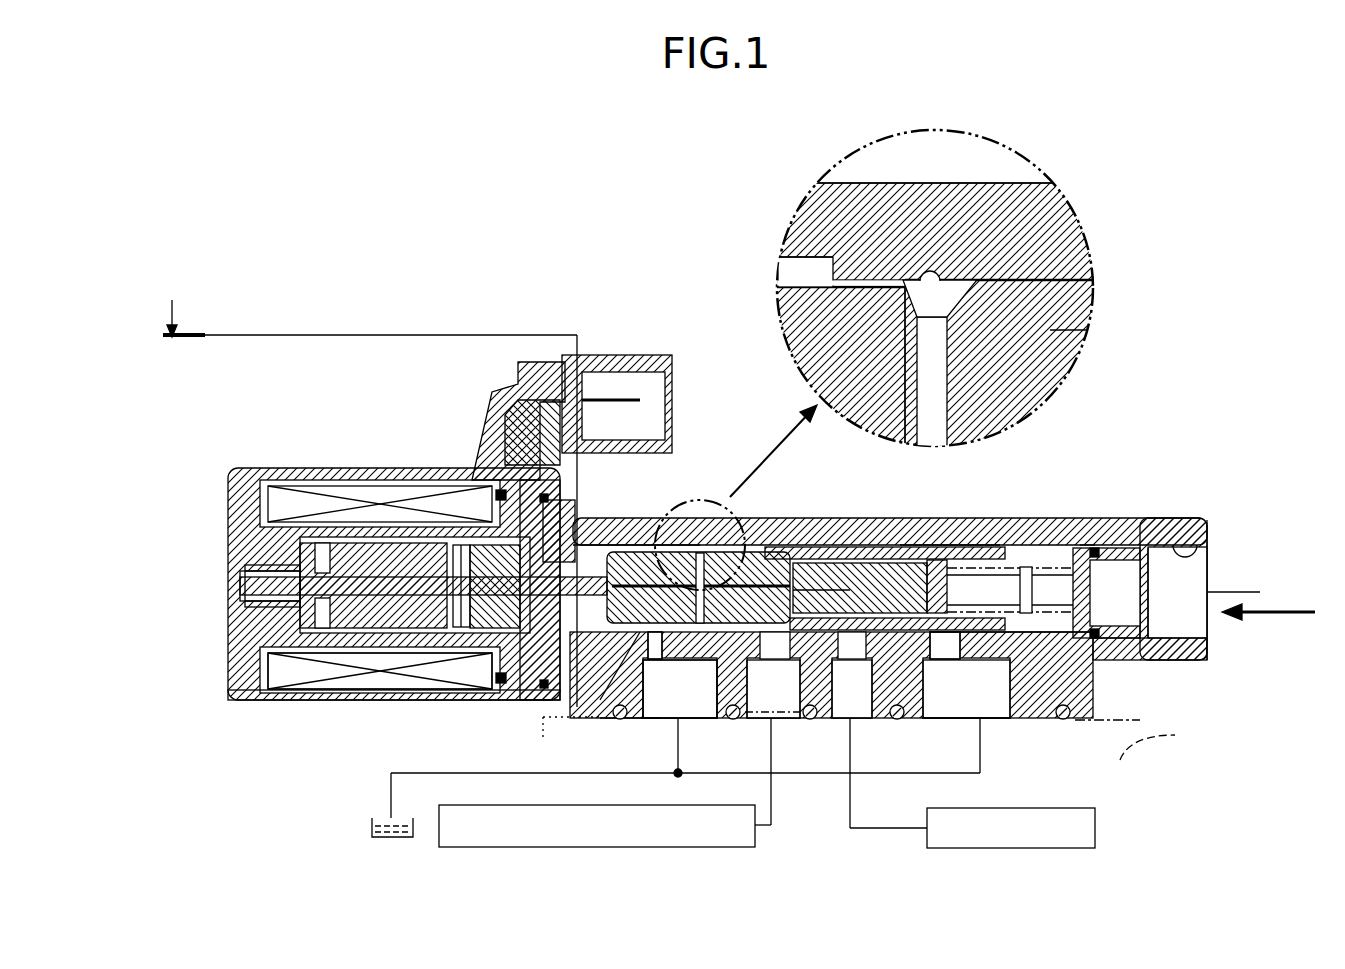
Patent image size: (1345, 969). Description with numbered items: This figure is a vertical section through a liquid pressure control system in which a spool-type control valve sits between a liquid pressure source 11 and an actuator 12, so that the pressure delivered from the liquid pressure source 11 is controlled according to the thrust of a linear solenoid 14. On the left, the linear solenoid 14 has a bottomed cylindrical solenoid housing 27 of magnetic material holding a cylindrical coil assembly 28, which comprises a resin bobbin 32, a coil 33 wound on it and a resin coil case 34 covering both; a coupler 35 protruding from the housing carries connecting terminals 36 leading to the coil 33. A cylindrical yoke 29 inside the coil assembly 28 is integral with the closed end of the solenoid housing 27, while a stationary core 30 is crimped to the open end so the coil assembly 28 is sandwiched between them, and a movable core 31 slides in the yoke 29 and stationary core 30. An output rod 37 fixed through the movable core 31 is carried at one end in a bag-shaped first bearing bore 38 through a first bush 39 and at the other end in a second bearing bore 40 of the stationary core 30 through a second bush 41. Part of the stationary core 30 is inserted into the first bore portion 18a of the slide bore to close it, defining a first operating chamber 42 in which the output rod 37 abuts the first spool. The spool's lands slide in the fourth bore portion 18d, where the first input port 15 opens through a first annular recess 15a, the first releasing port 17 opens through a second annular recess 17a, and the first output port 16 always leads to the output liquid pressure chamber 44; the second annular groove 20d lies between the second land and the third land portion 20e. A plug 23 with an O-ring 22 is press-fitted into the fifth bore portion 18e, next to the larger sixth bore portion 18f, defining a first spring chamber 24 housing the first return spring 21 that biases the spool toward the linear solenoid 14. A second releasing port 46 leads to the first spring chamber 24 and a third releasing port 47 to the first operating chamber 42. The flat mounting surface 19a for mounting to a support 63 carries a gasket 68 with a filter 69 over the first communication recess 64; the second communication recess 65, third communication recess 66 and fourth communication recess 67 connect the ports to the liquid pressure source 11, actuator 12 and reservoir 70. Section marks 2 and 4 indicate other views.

The section line 2- 2 is at (1253, 558).
The section line 4- 4 is at (368, 481).
The liquid pressure source 11 is at (445, 812).
The actuator 12 is at (1090, 810).
The linear solenoid 14 is at (225, 493).
The first input port 15 is at (695, 648).
The first annular recess 15a is at (785, 555).
The first output port 16 is at (870, 605).
The first releasing port 17 is at (940, 665).
The second annular recess 17a is at (985, 560).
The first bore portion 18a is at (578, 705).
The fourth bore portion 18d is at (925, 283).
The fifth bore portion 18e is at (1080, 545).
The sixth bore portion 18f is at (1210, 545).
The mounting surface 19a is at (1100, 722).
The second annular groove 20d is at (935, 705).
The third land portion 20e is at (1010, 655).
The first return spring 21 is at (1100, 645).
The O-ring 22 is at (1100, 548).
The plug 23 is at (1200, 600).
The first spring chamber 24 is at (1045, 565).
The solenoid housing 27 is at (355, 470).
The coil assembly 28 is at (405, 480).
The yoke 29 is at (410, 672).
The stationary core 30 is at (455, 485).
The movable core 31 is at (345, 545).
The bobbin 32 is at (365, 665).
The coil 33 is at (450, 670).
The coil case 34 is at (485, 694).
The coupler 35 is at (522, 370).
The connecting terminals 36 is at (600, 400).
The output rod 37 is at (528, 600).
The first bearing bore 38 is at (240, 585).
The first bush 39 is at (268, 572).
The second bearing bore 40 is at (553, 723).
The second bush 41 is at (530, 568).
The first operating chamber 42 is at (575, 520).
The output liquid pressure chamber 44 is at (820, 548).
The second releasing port 46 is at (1020, 605).
The third releasing port 47 is at (690, 575).
The support 63 is at (1166, 740).
The first communication recess 64 is at (750, 722).
The second communication recess 65 is at (855, 722).
The third communication recess 66 is at (682, 722).
The fourth communication recess 67 is at (1005, 722).
The gasket 68 is at (1060, 725).
The filter 69 is at (850, 655).
The reservoir 70 is at (375, 818).